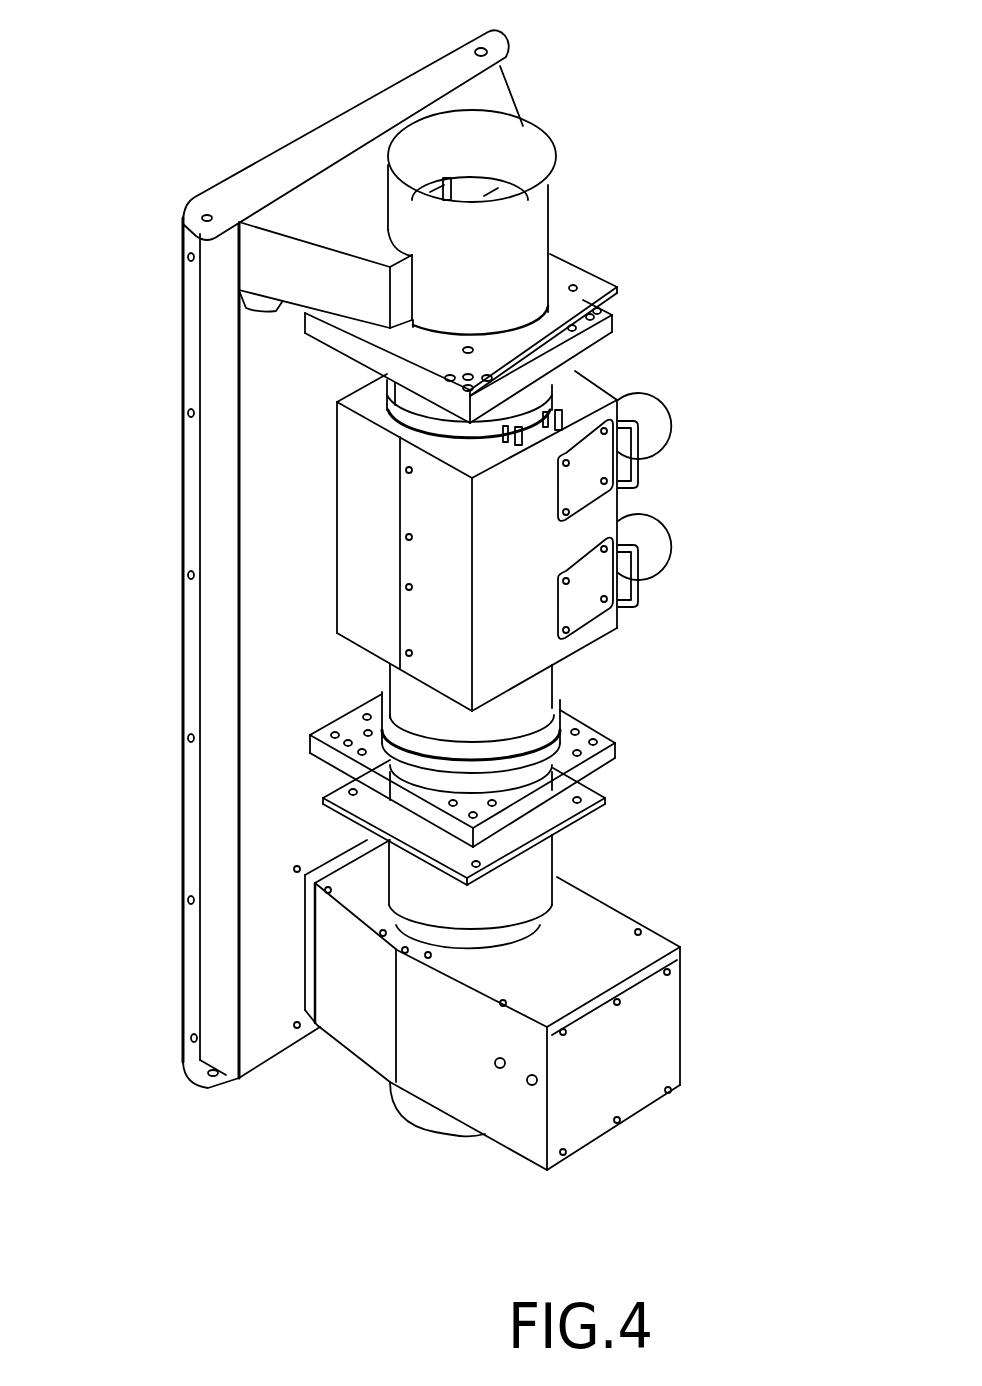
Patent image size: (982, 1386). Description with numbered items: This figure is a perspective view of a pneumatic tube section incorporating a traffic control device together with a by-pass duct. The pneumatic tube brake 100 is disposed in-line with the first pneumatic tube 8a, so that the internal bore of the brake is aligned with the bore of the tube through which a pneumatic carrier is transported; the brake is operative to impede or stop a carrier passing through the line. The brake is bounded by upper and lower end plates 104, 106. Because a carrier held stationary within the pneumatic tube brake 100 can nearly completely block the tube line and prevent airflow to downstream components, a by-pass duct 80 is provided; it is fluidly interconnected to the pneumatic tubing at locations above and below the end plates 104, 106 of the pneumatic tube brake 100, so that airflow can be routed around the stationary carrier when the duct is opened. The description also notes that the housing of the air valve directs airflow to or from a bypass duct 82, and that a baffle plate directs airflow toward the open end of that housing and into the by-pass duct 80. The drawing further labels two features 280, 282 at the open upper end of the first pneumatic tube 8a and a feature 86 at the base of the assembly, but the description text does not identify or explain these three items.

The by-pass duct 80 is at (220, 463).
The first pneumatic tube 8a is at (530, 241).
The inner tube 280 is at (437, 190).
The inner tube bottom 282 is at (490, 193).
The end plate 104 is at (593, 337).
The pneumatic tube brake 100 is at (640, 643).
The end plate 106 is at (608, 754).
The bypass duct 82 is at (650, 948).
The bottom cylinder 86 is at (416, 1113).